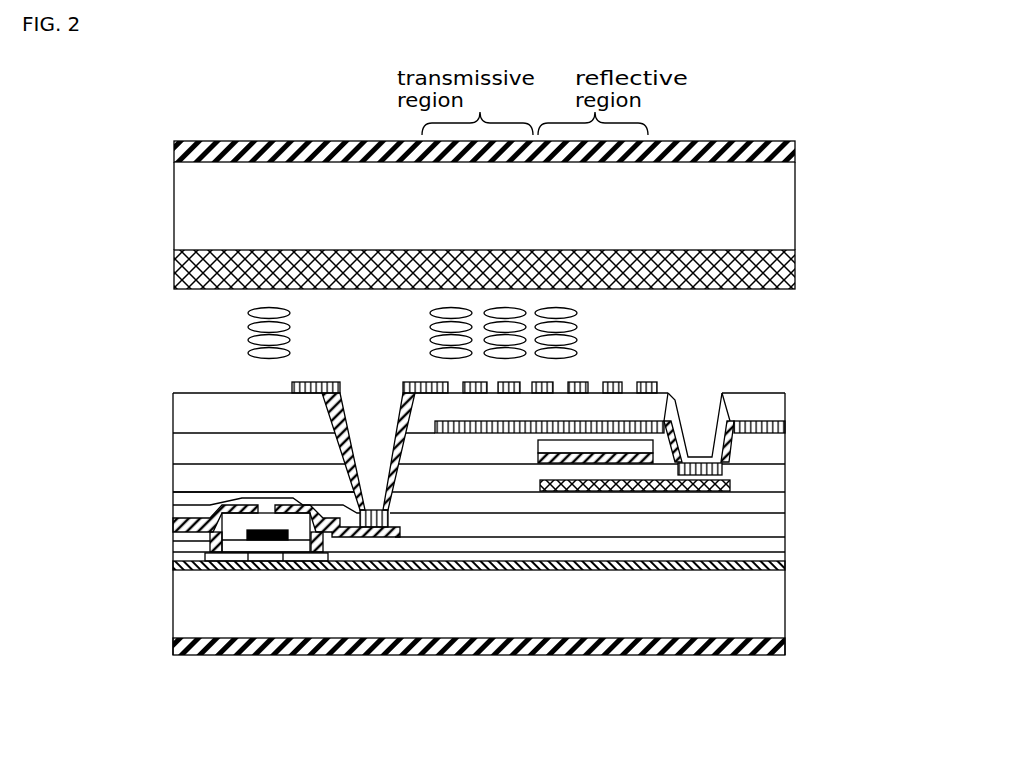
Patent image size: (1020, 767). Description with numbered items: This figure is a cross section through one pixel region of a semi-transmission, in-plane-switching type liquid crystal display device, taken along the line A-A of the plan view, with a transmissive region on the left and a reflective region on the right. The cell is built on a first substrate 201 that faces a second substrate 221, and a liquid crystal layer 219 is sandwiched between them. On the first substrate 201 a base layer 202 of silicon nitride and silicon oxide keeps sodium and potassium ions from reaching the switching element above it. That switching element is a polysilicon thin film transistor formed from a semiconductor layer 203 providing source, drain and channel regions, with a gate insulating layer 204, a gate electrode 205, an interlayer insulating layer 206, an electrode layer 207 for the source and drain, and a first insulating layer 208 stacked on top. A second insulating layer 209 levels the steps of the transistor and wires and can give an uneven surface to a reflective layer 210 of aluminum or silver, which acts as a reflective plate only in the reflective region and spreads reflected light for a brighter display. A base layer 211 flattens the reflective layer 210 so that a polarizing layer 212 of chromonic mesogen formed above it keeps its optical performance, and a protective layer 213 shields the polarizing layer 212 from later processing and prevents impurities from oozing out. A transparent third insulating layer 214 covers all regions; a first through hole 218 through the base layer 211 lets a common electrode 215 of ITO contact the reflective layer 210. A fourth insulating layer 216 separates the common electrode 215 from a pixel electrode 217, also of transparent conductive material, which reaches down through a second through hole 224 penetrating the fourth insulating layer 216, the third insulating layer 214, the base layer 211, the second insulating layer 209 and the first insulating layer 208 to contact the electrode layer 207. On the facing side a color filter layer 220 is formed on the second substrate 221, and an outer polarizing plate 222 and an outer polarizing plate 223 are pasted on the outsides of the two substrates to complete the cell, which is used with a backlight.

The first substrate 201 is at (755, 608).
The base layer 202 is at (770, 563).
The semiconductor layer 203 is at (258, 562).
The gate insulating layer 204 is at (183, 553).
The gate electrode 205 is at (248, 535).
The interlayer insulating layer 206 is at (182, 540).
The electrode layer 207 is at (185, 527).
The first insulating layer 208 is at (188, 509).
The second insulating layer 209 is at (188, 499).
The reflective layer 210 is at (717, 484).
The base layer 211 is at (763, 475).
The polarizing layer 212 is at (622, 457).
The protective layer 213 is at (585, 450).
The third insulating layer 214 is at (763, 447).
The common electrode 215 is at (783, 423).
The fourth insulating layer 216 is at (763, 408).
The pixel electrode 217 is at (580, 381).
The first through hole 218 is at (695, 402).
The liquid crystal layer 219 is at (247, 345).
The color filter layer 220 is at (770, 270).
The second substrate 221 is at (763, 206).
The outer polarizing plate 222 is at (785, 645).
The outer polarizing plate 223 is at (767, 150).
The second through hole 224 is at (375, 420).